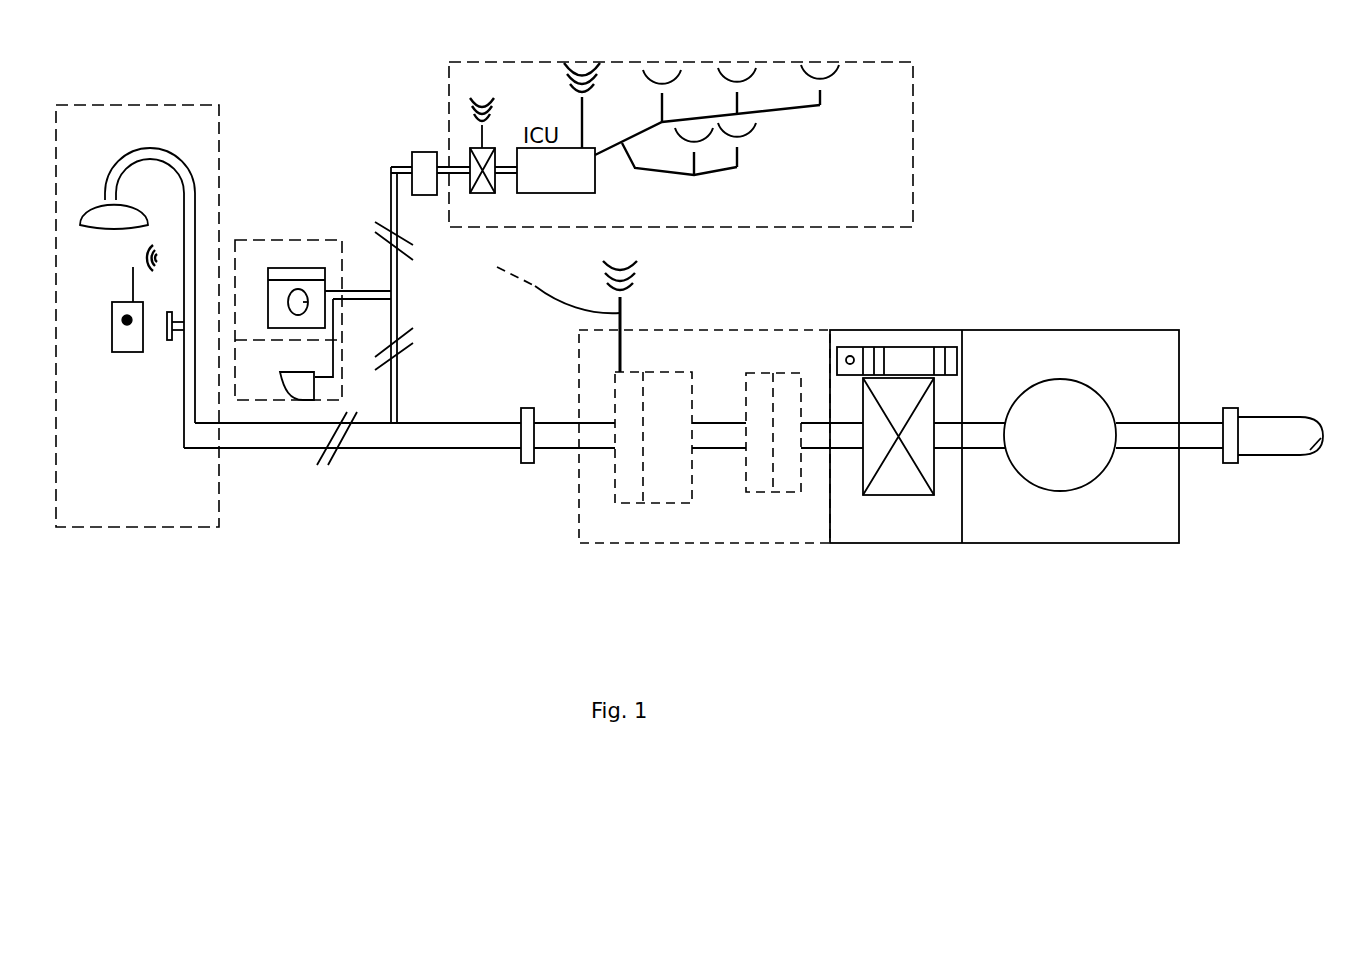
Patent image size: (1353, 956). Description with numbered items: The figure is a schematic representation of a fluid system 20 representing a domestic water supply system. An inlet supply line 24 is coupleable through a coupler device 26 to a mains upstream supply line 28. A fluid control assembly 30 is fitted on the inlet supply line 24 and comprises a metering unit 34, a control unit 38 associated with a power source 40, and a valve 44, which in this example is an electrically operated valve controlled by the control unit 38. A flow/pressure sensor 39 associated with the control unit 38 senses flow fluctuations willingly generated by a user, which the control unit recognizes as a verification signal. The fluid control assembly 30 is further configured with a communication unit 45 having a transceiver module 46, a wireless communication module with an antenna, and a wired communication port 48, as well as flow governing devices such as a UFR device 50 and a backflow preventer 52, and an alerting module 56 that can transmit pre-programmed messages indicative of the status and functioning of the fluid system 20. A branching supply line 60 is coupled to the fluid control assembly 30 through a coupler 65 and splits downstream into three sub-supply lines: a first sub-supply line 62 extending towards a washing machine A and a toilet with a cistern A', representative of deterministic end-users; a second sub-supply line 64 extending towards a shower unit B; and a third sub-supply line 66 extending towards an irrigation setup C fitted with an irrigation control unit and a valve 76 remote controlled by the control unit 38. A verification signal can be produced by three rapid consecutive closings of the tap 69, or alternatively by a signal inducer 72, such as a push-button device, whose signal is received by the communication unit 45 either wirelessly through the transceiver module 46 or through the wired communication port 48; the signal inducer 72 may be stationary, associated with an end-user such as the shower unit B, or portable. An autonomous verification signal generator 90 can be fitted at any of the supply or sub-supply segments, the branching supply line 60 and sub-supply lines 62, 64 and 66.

The fluid system 20 is at (1118, 168).
The inlet supply line 24 is at (1202, 432).
The coupler device 26 is at (1231, 408).
The mains upstream supply line 28 is at (1267, 430).
The fluid control assembly 30 is at (892, 322).
The metering unit 34 is at (1060, 490).
The control unit 38 is at (912, 355).
The flow/pressure sensor 39 is at (945, 358).
The power source 40 is at (874, 358).
The valve 44 is at (892, 497).
The communication unit 45 is at (626, 505).
The transceiver module 46 is at (621, 322).
The wired communication port 48 is at (538, 287).
The UFR (Unmeasured Flow Reducer) device 50 is at (788, 494).
The backflow preventer 52 is at (760, 494).
The alerting module 56 is at (850, 356).
The branching supply line 60 is at (401, 446).
The first sub-supply line 62 is at (358, 291).
The second sub-supply line 64 is at (184, 410).
The coupler 65 is at (526, 465).
The third sub-supply line 66 is at (398, 213).
The tap 69 is at (167, 332).
The signal inducer 72 is at (117, 333).
The valve 76 is at (482, 193).
The verification signal generator 90 is at (424, 152).
The washing machine A is at (288, 300).
The toilet with a cistern A' is at (258, 440).
The shower unit B is at (219, 142).
The irrigation setup C is at (912, 132).